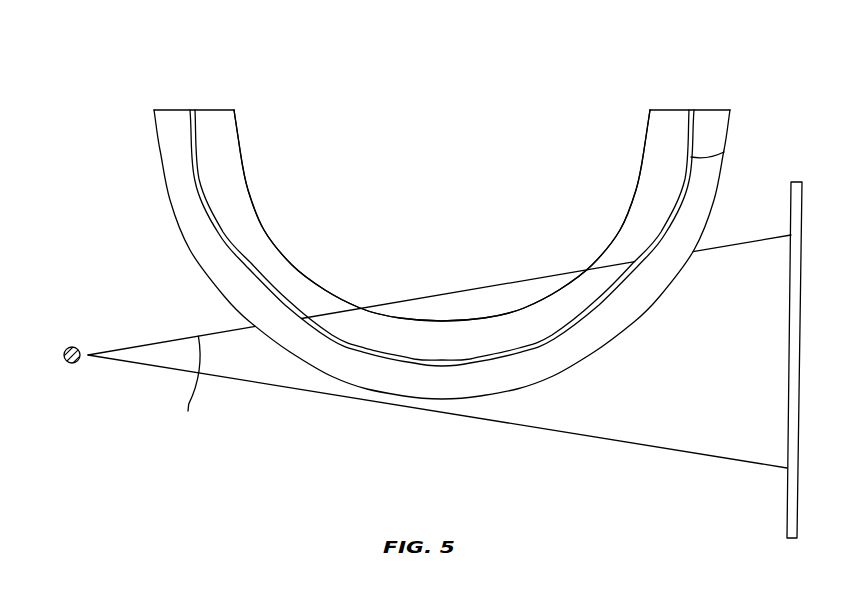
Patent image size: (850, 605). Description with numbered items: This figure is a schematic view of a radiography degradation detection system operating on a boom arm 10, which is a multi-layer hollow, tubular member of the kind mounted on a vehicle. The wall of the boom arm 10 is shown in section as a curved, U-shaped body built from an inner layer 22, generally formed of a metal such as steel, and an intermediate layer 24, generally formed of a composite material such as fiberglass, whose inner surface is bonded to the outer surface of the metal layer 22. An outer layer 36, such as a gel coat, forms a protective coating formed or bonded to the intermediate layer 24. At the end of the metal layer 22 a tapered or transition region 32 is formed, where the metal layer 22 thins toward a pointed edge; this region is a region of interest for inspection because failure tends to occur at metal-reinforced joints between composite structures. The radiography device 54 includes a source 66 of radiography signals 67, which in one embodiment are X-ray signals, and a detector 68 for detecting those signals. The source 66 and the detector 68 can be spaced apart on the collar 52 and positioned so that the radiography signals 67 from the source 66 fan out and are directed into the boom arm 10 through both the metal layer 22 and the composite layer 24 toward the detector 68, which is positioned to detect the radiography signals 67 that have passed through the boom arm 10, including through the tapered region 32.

The boom arm 10 is at (764, 91).
The inner layer 22 is at (673, 120).
The intermediate layer 24 is at (694, 110).
The transition region 32 is at (274, 233).
The outer layer 36 is at (717, 157).
The collar 52 is at (705, 194).
The radiography device 54 is at (288, 416).
The source 66 is at (90, 380).
The radiography signals 67 is at (189, 383).
The detector 68 is at (800, 357).